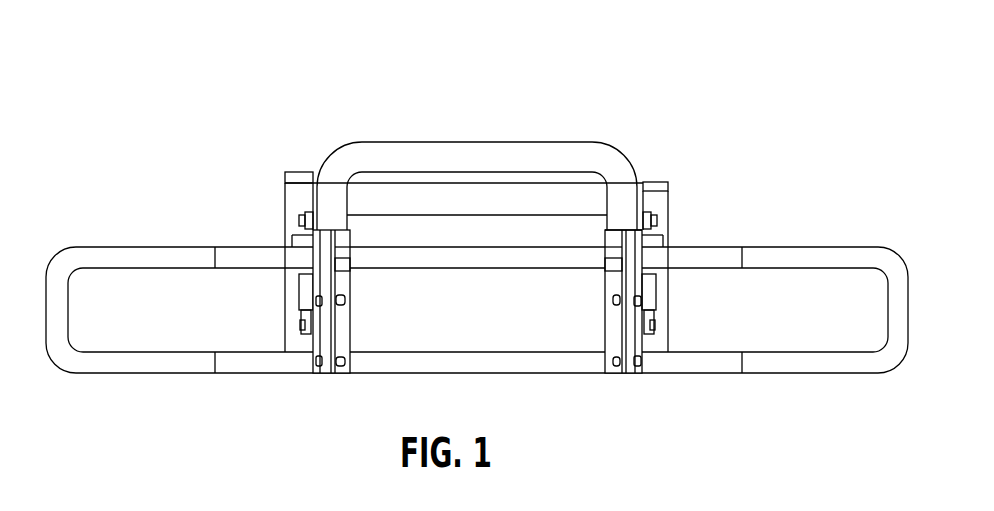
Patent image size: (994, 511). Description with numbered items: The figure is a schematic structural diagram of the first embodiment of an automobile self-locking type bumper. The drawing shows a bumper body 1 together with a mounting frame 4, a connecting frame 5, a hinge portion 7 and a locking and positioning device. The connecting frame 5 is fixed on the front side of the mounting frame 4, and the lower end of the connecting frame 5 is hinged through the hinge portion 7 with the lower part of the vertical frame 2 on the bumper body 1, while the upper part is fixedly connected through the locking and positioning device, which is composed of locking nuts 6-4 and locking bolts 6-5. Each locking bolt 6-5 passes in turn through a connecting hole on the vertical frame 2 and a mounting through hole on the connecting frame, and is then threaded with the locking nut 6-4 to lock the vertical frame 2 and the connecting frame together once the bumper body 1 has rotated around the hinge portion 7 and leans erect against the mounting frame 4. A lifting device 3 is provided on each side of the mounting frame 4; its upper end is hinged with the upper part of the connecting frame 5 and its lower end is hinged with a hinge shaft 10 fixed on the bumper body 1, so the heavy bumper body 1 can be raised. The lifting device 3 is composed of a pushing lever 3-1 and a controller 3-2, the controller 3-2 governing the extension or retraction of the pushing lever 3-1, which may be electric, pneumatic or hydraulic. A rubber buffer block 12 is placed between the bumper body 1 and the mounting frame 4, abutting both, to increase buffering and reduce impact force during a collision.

The bumper body 1 is at (138, 258).
The hinge shaft 10 is at (301, 322).
The lifting device 3 is at (263, 76).
The pushing lever 3-1 is at (302, 287).
The controller 3-2 is at (309, 215).
The buffer block 12 is at (343, 245).
The hinge portion 7 is at (317, 350).
The vertical frame 2 is at (614, 246).
The connecting frame 5 is at (628, 262).
The mounting frame 4 is at (663, 192).
The locking nut 6-4 is at (618, 295).
The locking bolt 6-5 is at (636, 297).